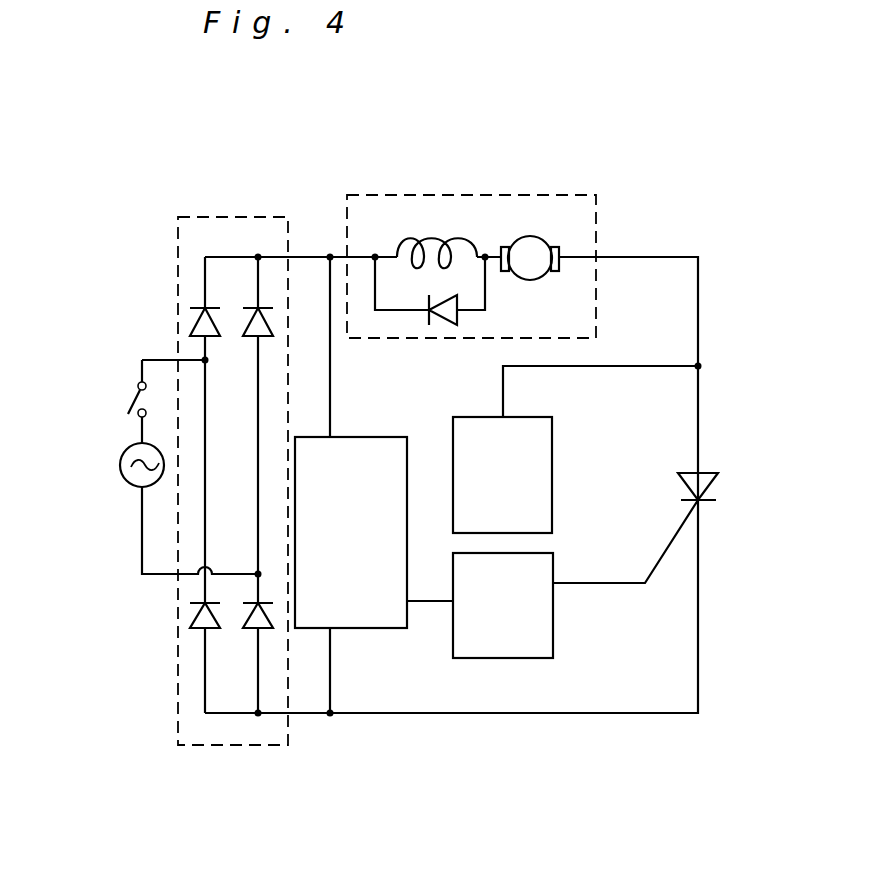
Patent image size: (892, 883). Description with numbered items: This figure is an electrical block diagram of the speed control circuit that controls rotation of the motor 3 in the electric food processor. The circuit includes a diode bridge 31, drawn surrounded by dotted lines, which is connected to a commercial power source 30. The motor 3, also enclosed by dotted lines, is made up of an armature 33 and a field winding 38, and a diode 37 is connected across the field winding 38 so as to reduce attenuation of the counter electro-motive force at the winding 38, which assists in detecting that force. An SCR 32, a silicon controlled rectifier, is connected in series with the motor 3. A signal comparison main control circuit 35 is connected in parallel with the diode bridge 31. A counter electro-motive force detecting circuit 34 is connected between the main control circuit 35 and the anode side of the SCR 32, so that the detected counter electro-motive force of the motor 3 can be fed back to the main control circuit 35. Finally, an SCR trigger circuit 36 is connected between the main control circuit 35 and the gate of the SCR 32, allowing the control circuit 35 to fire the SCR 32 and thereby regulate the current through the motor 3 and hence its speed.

The motor 3 is at (596, 225).
The commercial power source 30 is at (125, 482).
The diode bridge 31 is at (178, 262).
The SCR 32 is at (712, 483).
The armature 33 is at (535, 237).
The counter electro-motive force detecting circuit 34 is at (543, 435).
The signal comparison main control circuit 35 is at (372, 618).
The SCR trigger circuit 36 is at (535, 648).
The diode 37 is at (450, 300).
The field winding 38 is at (430, 240).